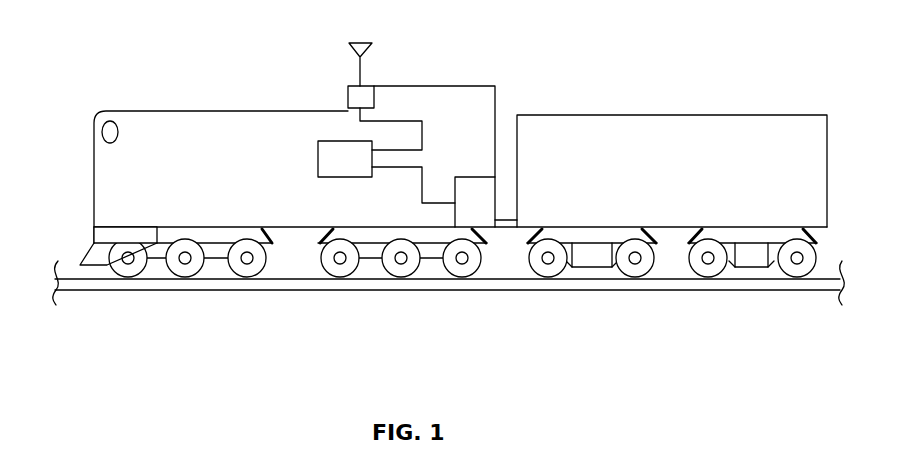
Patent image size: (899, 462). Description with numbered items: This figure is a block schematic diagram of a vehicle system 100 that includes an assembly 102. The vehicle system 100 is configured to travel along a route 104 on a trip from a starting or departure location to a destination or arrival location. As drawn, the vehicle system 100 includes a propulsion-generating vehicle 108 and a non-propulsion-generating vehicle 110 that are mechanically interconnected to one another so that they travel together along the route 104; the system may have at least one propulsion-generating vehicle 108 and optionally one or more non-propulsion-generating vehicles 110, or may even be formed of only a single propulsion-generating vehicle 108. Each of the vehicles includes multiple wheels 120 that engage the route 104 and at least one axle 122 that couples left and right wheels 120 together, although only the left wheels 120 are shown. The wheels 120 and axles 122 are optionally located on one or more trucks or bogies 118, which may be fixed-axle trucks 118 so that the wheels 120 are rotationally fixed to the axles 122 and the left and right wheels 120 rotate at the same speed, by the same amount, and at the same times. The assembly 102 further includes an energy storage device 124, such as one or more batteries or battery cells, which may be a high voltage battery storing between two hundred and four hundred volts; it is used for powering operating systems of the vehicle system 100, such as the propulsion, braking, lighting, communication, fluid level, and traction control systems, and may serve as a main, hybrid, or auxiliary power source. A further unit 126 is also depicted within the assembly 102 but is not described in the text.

The vehicle system 100 is at (453, 200).
The assembly 102 is at (379, 134).
The route 104 is at (95, 300).
The propulsion-generating vehicle 108 is at (206, 110).
The non-propulsion-generating vehicle 110 is at (745, 186).
The truck 118 is at (430, 240).
The wheel 120 is at (326, 264).
The axle 122 is at (339, 262).
The energy storage device 124 is at (318, 162).
The communication unit 126 is at (348, 92).